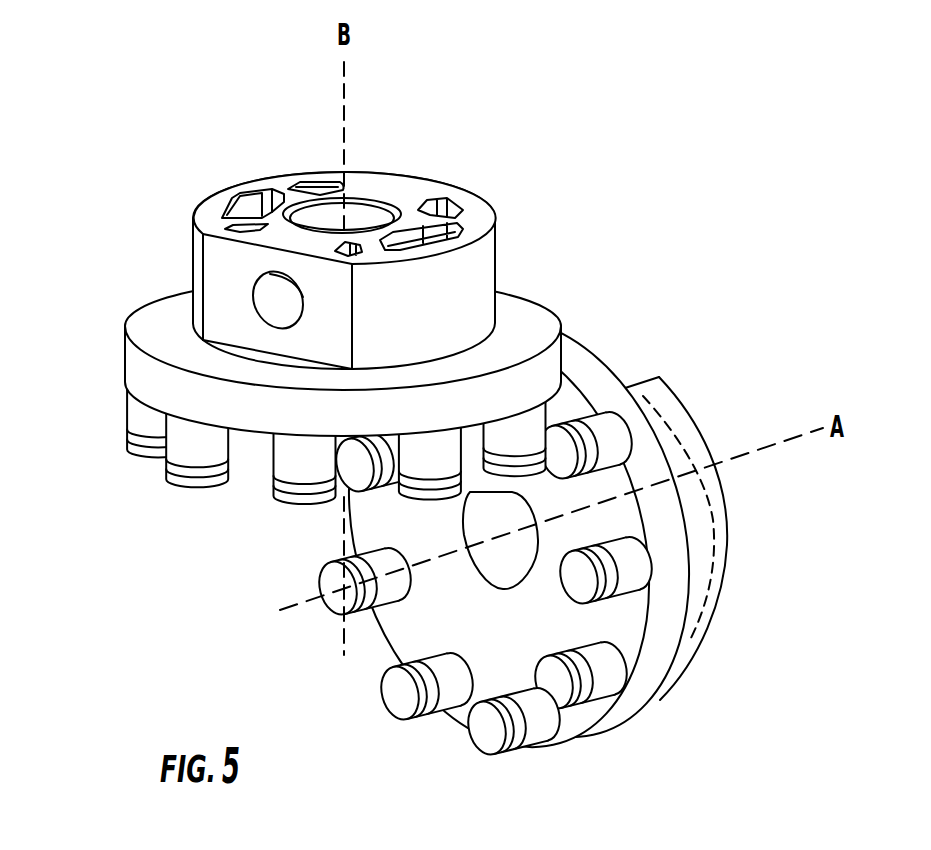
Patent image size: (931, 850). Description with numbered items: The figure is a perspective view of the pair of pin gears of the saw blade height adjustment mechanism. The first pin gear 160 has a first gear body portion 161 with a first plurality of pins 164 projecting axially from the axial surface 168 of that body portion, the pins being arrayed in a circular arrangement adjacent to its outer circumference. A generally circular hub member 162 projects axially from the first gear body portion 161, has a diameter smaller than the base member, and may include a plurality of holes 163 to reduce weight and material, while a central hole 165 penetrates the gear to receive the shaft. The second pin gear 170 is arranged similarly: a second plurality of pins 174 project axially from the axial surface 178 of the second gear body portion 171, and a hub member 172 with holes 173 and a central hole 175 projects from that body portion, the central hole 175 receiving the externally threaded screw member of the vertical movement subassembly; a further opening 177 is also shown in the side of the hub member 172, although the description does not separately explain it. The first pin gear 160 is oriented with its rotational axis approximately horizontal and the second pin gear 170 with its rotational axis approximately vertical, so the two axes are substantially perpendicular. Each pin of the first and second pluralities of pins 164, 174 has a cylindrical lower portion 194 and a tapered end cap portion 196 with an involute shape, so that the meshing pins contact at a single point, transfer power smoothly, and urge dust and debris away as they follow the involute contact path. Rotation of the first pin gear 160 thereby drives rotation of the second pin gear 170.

The first pin gear 160 is at (545, 545).
The first gear body portion 161 is at (617, 400).
The hub member 162 is at (584, 528).
The holes 163 is at (695, 490).
The first plurality of pins 164 is at (575, 746).
The central hole 165 is at (497, 555).
The axial surface 168 is at (483, 680).
The second pin gear 170 is at (339, 327).
The second gear body portion 171 is at (537, 318).
The hub member 172 is at (303, 252).
The holes 173 is at (247, 210).
The second plurality of pins 174 is at (175, 457).
The central hole 175 is at (352, 215).
The side hole 177 is at (263, 304).
The axial surface 178 is at (253, 443).
The cylindrical lower portion 194 is at (610, 683).
The tapered end cap portion 196 is at (562, 693).